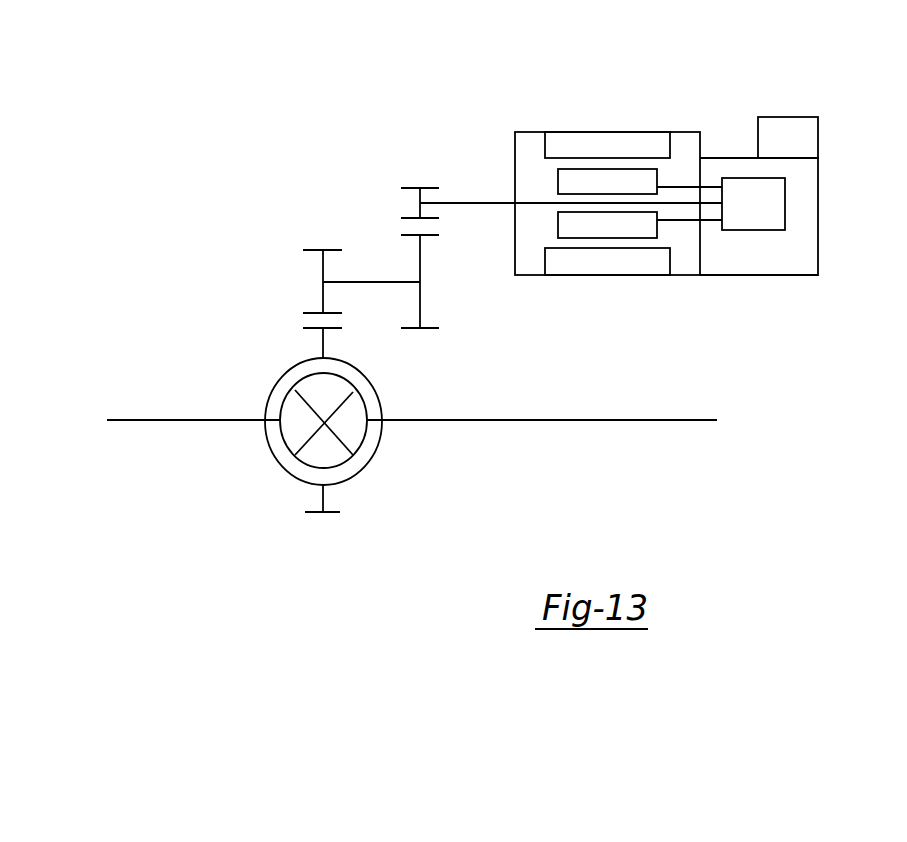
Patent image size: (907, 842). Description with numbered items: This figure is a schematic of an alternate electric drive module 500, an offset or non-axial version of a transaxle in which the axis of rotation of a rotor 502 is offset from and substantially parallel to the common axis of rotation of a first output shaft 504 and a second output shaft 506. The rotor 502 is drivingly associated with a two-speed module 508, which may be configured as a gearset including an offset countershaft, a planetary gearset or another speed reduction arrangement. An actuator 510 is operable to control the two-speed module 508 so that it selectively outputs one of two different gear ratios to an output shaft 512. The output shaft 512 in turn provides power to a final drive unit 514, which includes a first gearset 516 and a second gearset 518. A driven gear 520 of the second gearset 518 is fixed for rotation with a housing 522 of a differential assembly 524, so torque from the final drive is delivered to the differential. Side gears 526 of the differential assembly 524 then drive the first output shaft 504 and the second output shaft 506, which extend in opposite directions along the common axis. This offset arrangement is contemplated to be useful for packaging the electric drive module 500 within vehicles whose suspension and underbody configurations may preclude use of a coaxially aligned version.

The electric drive module 500 is at (822, 76).
The rotor 502 is at (558, 182).
The first output shaft 504 is at (160, 421).
The second output shaft 506 is at (482, 421).
The two-speed module 508 is at (750, 234).
The actuator 510 is at (818, 133).
The output shaft 512 is at (462, 203).
The final drive unit 514 is at (312, 238).
The first gearset 516 is at (410, 331).
The second gearset 518 is at (300, 306).
The driven gear 520 is at (322, 340).
The housing 522 is at (353, 477).
The differential assembly 524 is at (293, 461).
The side gears 526 is at (292, 408).